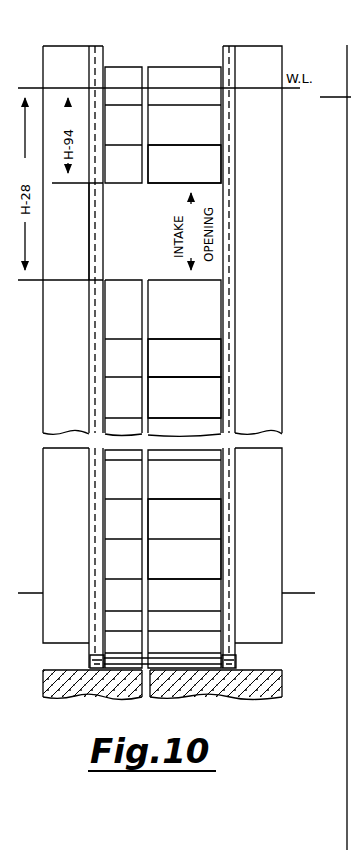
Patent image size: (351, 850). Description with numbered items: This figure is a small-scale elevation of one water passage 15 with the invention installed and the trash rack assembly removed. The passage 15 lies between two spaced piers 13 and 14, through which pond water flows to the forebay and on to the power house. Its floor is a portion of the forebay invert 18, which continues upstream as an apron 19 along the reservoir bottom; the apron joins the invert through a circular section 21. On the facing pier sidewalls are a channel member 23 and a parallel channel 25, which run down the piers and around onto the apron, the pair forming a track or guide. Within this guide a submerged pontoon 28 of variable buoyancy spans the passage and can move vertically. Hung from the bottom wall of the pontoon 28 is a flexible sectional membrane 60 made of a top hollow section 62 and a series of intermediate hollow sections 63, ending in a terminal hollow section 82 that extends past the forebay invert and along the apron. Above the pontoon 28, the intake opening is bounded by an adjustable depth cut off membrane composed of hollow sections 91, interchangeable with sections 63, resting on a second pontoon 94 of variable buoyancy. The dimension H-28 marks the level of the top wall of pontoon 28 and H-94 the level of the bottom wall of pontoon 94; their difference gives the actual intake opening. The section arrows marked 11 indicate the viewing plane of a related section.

The section line 11- 11 is at (223, 46).
The pier 13 is at (58, 50).
The pier 14 is at (265, 50).
The passage 15 is at (121, 54).
The forebay invert 18 is at (290, 593).
The apron 19 is at (265, 672).
The circular section of apron 21 is at (95, 634).
The channel member 23 is at (92, 200).
The channel 25 is at (229, 166).
The submerged pontoon 28 is at (212, 318).
The flexible sectional membrane 60 is at (110, 482).
The top hollow section 62 is at (212, 358).
The intermediate hollow section 63 is at (208, 400).
The terminal hollow section 82 is at (200, 660).
The hollow section of cut off membrane 91 is at (212, 125).
The pontoon of variable buoyancy 94 is at (212, 157).